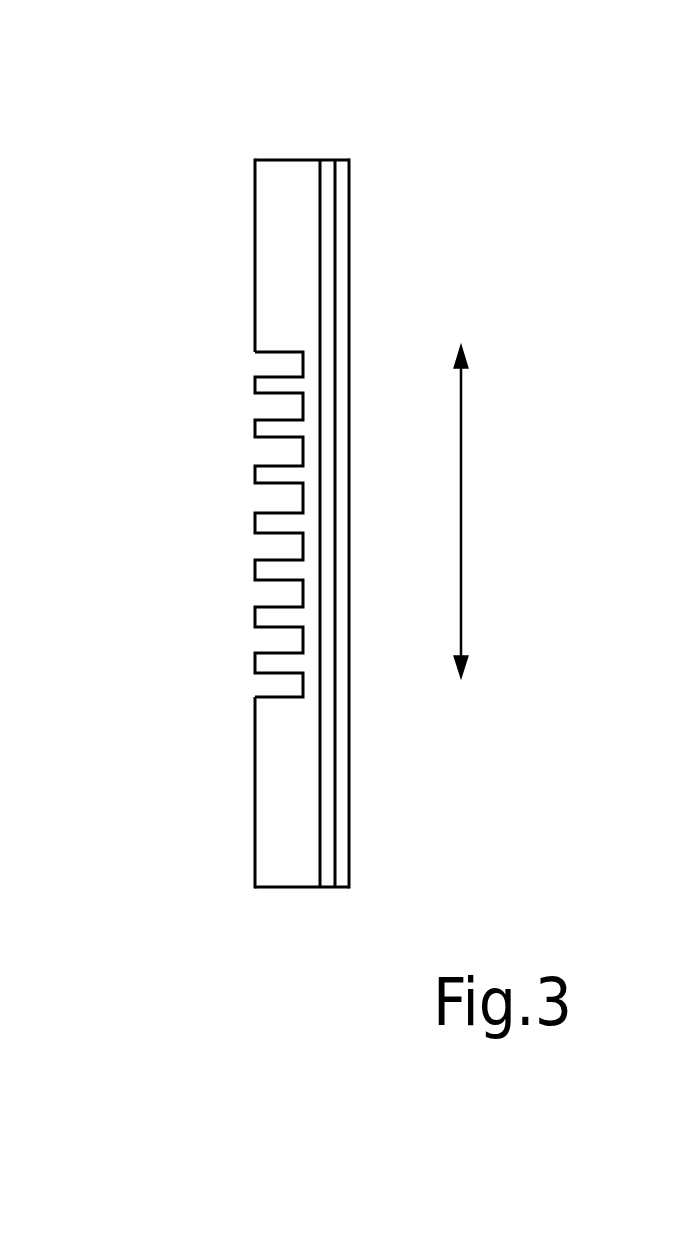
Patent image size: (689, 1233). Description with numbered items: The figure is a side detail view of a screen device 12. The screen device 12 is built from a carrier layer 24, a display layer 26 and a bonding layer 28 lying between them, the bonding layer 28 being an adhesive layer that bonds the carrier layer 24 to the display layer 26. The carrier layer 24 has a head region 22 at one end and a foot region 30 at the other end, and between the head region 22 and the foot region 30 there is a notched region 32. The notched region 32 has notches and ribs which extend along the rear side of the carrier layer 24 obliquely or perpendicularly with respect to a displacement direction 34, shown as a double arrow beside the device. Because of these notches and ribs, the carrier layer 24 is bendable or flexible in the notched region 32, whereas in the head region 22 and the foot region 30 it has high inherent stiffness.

The screen device 12 is at (80, 113).
The head region 22 is at (306, 288).
The carrier layer 24 is at (254, 237).
The display layer 26 is at (350, 237).
The bonding layer 28 is at (327, 160).
The foot region 30 is at (305, 820).
The notched region 32 is at (247, 347).
The displacement direction 34 is at (461, 497).